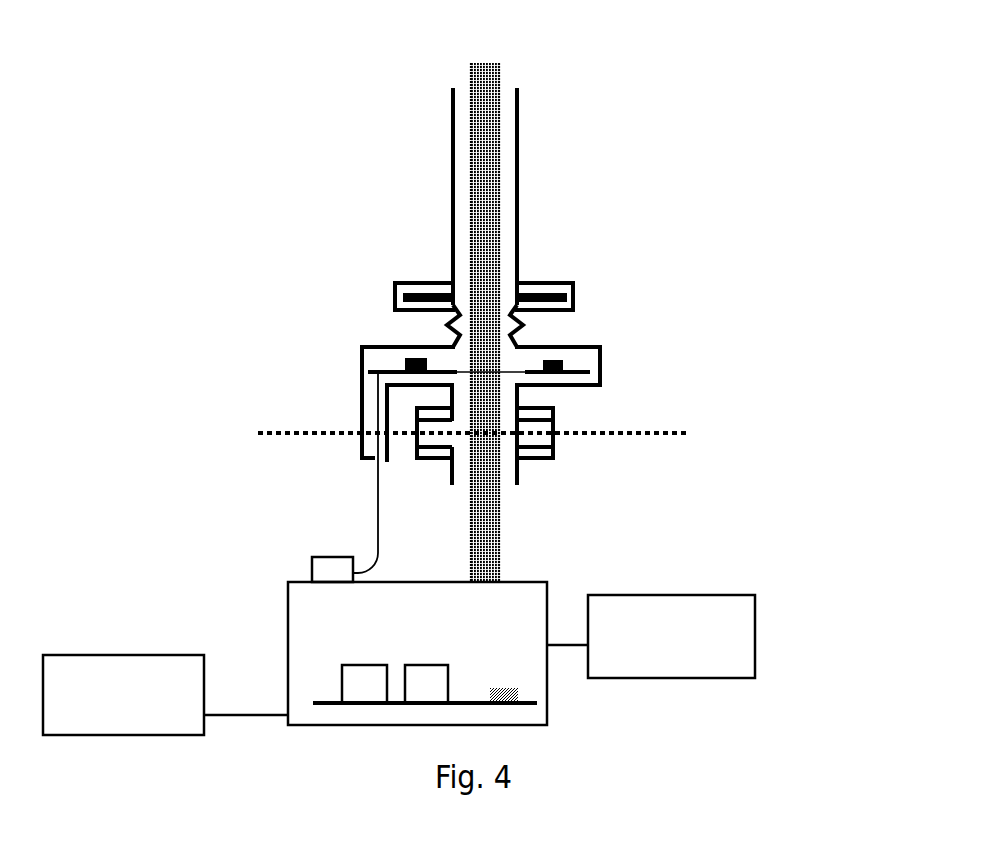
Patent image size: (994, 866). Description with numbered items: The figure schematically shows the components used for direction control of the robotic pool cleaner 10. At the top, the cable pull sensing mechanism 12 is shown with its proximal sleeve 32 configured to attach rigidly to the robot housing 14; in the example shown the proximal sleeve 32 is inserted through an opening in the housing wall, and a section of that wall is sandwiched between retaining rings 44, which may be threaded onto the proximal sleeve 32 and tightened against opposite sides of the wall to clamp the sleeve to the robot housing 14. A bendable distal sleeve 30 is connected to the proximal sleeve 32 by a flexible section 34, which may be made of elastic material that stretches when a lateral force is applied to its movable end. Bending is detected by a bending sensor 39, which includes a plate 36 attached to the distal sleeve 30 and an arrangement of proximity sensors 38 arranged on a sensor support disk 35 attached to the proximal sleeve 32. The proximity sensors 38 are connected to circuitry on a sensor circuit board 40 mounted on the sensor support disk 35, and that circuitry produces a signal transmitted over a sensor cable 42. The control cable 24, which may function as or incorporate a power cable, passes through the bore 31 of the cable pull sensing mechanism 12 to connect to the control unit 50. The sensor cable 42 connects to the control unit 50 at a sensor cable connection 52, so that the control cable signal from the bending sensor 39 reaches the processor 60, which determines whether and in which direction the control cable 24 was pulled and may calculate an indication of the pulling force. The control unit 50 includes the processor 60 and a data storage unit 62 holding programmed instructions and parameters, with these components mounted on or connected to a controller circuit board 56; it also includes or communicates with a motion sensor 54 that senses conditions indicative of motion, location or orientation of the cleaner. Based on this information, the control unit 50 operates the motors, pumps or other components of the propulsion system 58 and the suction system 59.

The robotic pool cleaner 10 is at (752, 405).
The cable pull sensing mechanism 12 is at (310, 243).
The robot housing 14 is at (257, 433).
The control cable 24 is at (475, 88).
The distal sleeve 30 is at (518, 232).
The bore 31 is at (507, 102).
The proximal sleeve 32 is at (518, 472).
The flexible section 34 is at (455, 328).
The sensor support disk 35 is at (605, 367).
The plate 36 is at (432, 288).
The proximity sensors 38 is at (563, 362).
The bending sensor 39 is at (578, 332).
The sensor circuit board 40 is at (400, 372).
The sensor cable 42 is at (378, 478).
The retaining rings 44 is at (553, 457).
The control unit 50 is at (288, 615).
The sensor cable connection 52 is at (310, 558).
The motion sensor 54 is at (503, 688).
The controller circuit board 56 is at (333, 703).
The propulsion system 58 is at (697, 597).
The suction system 59 is at (120, 655).
The processor 60 is at (360, 665).
The data storage unit 62 is at (428, 665).